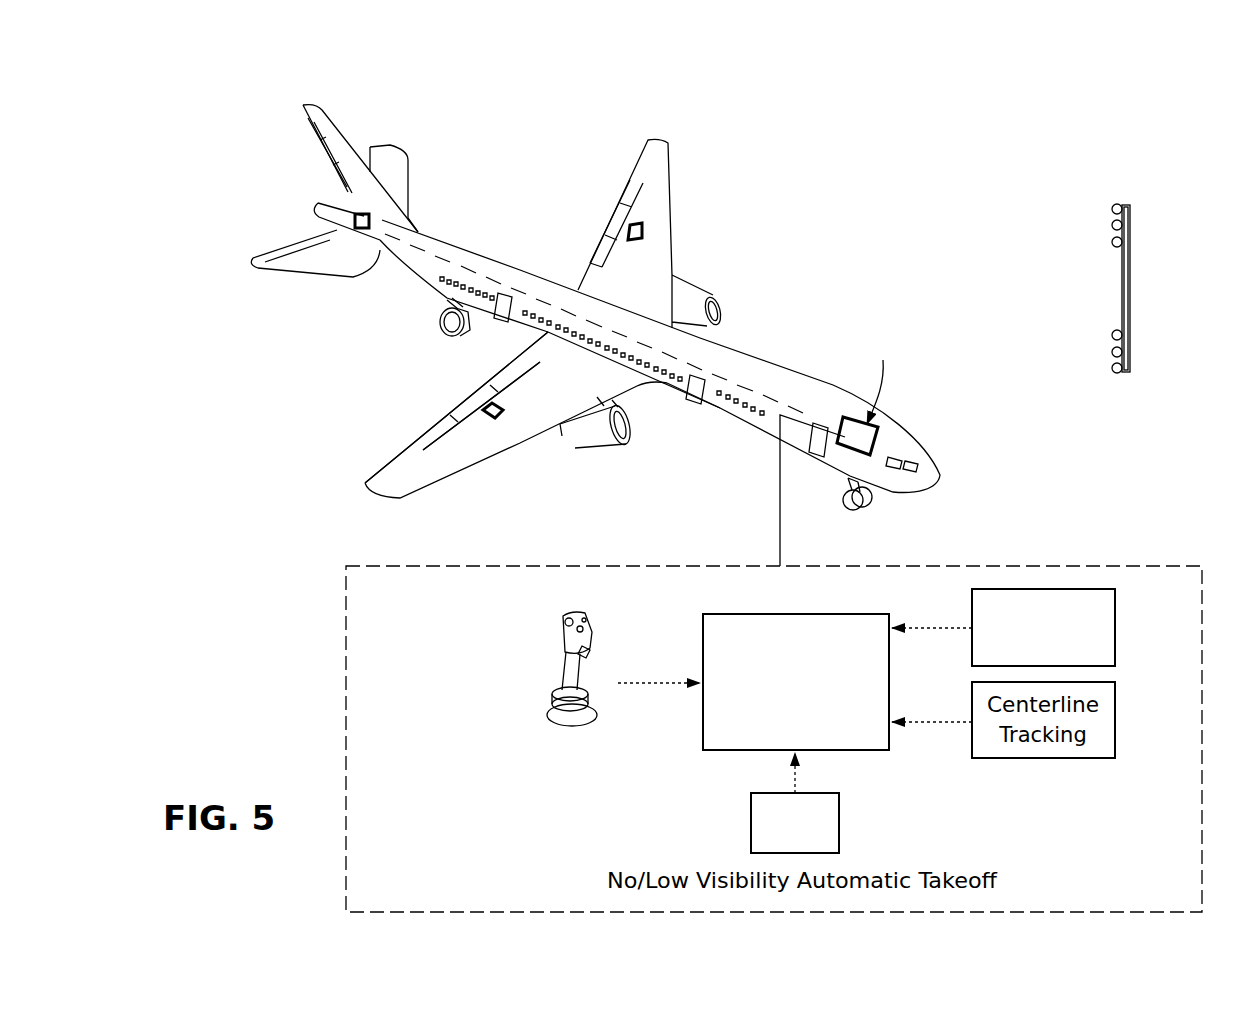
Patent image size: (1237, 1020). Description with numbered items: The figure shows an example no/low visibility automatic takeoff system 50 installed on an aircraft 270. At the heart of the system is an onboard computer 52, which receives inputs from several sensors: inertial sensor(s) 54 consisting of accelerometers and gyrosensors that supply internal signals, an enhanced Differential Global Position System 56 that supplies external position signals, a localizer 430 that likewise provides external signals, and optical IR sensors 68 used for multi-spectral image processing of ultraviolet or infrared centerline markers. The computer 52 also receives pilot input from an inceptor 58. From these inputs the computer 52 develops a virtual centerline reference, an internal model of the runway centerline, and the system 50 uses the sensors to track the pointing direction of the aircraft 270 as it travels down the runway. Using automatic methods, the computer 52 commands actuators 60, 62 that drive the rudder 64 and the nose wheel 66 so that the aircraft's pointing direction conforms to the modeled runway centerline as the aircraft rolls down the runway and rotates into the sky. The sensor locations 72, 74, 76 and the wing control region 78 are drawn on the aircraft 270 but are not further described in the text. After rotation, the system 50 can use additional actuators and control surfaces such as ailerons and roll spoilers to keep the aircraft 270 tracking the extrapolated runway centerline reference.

The no/low visibility automatic takeoff system 50 is at (275, 80).
The onboard computer 52 is at (760, 613).
The inertial sensor(s) 54 is at (1117, 618).
The Differential Global Position System (DGPS) 56 is at (840, 805).
The inceptor 58 is at (520, 647).
The actuator 60 is at (350, 216).
The actuator 62 is at (842, 484).
The rudder 64 is at (330, 162).
The nose wheel 66 is at (875, 508).
The optical IR sensors 68 is at (441, 306).
The fin sensor 72 is at (628, 230).
The wing sensor 74 is at (488, 404).
The vertical stabilizer 76 is at (626, 183).
The wing control surface 78 is at (431, 422).
The aircraft 270 is at (493, 250).
The localizer 430 is at (1131, 318).